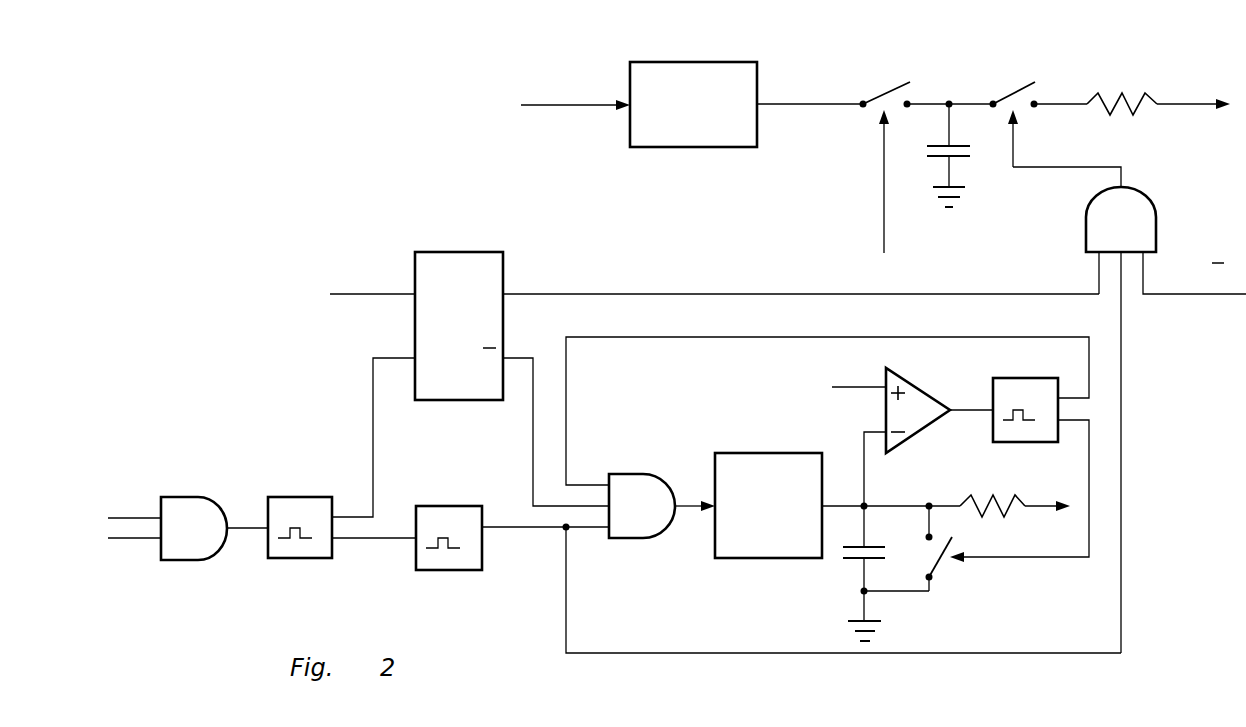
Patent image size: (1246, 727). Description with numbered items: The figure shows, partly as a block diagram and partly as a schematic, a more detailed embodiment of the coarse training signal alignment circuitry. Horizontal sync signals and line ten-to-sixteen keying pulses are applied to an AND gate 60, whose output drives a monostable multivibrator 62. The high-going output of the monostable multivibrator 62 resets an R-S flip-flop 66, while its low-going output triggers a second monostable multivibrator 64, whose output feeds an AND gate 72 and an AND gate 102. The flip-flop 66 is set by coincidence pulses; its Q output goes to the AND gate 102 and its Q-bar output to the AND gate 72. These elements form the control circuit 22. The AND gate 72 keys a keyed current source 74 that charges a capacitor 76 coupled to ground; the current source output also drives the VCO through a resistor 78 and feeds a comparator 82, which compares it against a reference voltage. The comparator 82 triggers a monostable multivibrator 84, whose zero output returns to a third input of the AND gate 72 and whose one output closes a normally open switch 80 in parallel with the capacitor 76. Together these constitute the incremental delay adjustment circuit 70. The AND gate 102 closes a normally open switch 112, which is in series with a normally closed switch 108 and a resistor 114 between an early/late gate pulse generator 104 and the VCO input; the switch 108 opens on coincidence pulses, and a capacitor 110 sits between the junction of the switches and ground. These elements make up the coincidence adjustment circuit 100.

The control circuit 22 is at (301, 393).
The AND gate 60 is at (174, 549).
The monostable multivibrator 62 is at (313, 497).
The second monostable multivibrator 64 is at (460, 506).
The R-S flip-flop 66 is at (473, 252).
The incremental delay adjustment circuit 70 is at (731, 407).
The AND gate 72 is at (662, 506).
The keyed current source 74 is at (771, 453).
The capacitor 76 is at (835, 555).
The resistor 78 is at (1000, 493).
The normally open switch 80 is at (1000, 546).
The comparator 82 is at (905, 380).
The monostable multivibrator 84 is at (1026, 378).
The coincidence adjustment circuit 100 is at (762, 212).
The AND gate 102 is at (1166, 420).
The early/late gate pulse generator 104 is at (673, 62).
The normally closed switch 108 is at (897, 57).
The capacitor 110 is at (965, 160).
The normally open switch 112 is at (1022, 57).
The resistor 114 is at (1120, 93).